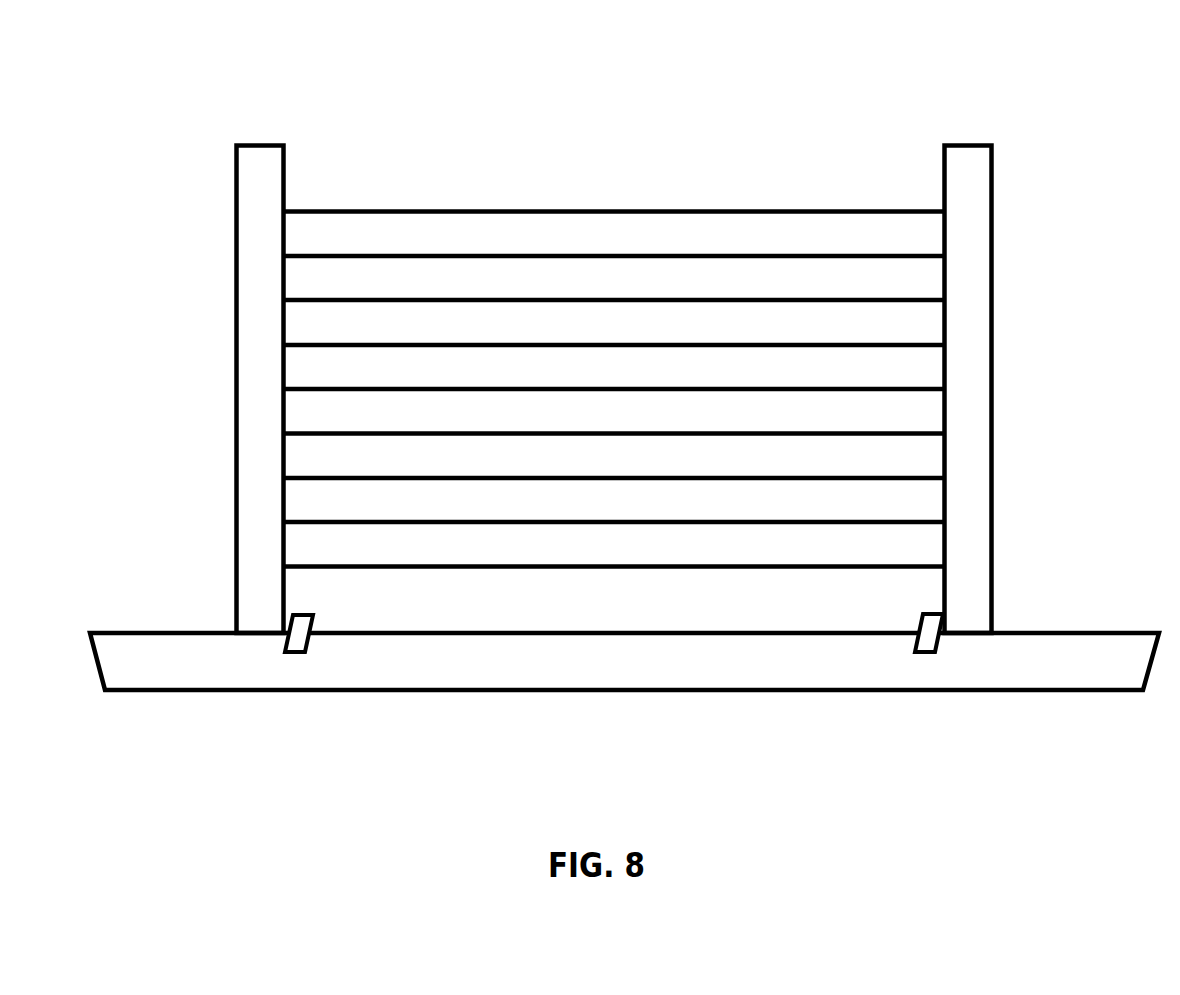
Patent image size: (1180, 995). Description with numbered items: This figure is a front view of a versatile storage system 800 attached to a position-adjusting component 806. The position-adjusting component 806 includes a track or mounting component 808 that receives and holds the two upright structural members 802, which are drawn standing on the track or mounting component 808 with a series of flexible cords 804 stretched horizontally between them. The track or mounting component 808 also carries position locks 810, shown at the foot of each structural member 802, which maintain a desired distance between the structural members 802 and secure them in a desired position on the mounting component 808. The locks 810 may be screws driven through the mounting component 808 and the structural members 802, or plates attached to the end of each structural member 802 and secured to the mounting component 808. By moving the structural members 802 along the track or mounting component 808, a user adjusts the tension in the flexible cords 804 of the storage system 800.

The versatile storage system 800 is at (164, 99).
The structural members 802 is at (235, 455).
The flexible cords 804 is at (590, 208).
The position-adjusting component 806 is at (618, 757).
The track or mounting component 808 is at (476, 693).
The position locks 810 is at (301, 652).